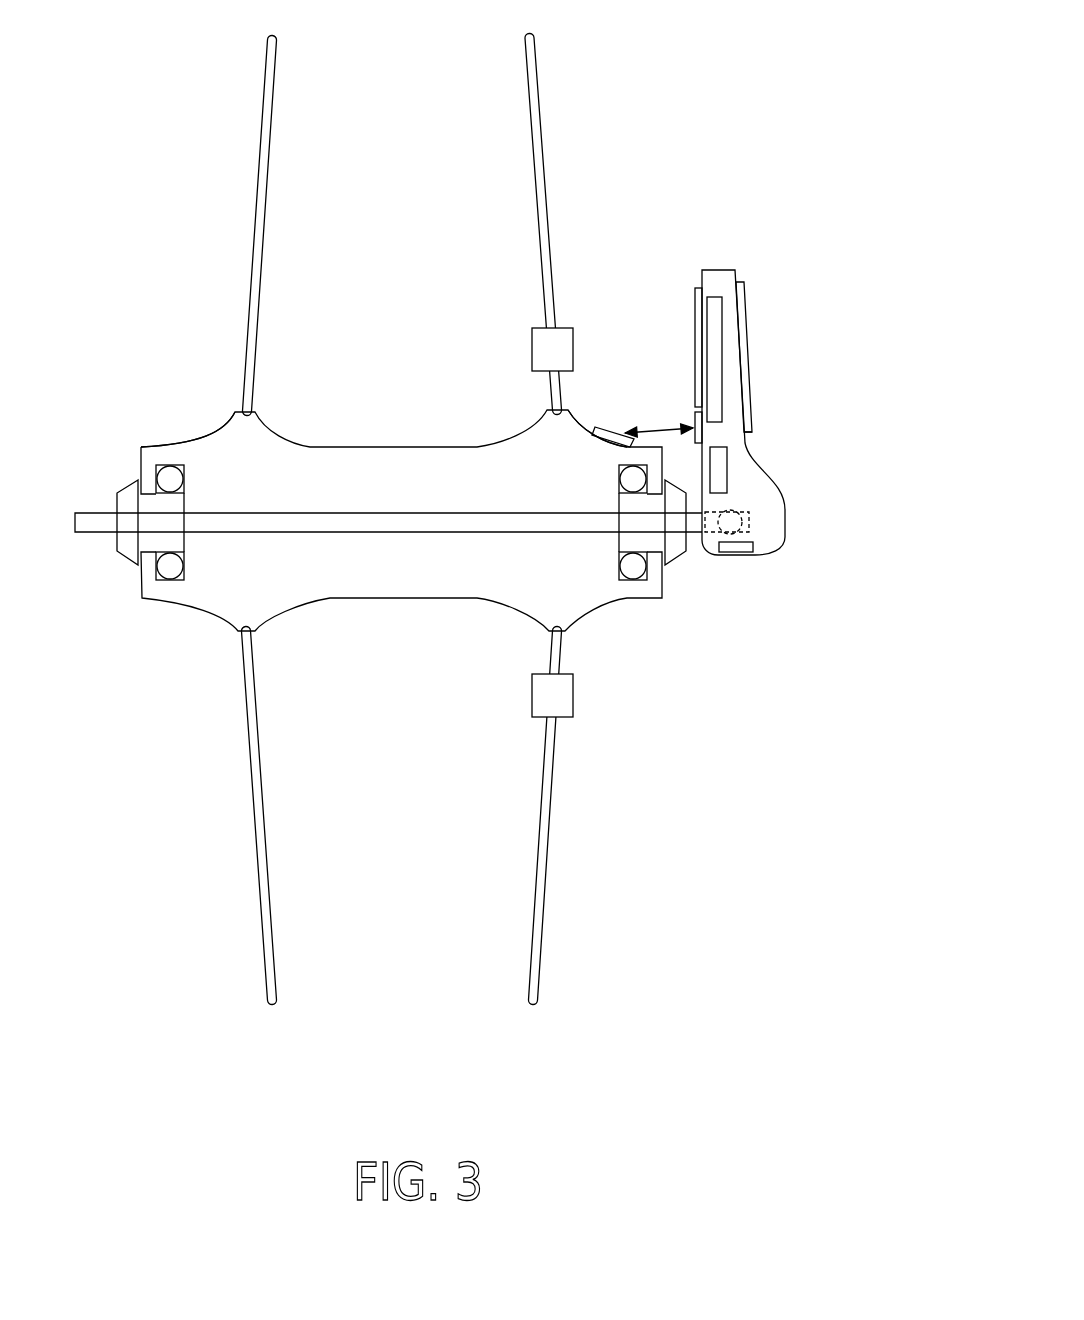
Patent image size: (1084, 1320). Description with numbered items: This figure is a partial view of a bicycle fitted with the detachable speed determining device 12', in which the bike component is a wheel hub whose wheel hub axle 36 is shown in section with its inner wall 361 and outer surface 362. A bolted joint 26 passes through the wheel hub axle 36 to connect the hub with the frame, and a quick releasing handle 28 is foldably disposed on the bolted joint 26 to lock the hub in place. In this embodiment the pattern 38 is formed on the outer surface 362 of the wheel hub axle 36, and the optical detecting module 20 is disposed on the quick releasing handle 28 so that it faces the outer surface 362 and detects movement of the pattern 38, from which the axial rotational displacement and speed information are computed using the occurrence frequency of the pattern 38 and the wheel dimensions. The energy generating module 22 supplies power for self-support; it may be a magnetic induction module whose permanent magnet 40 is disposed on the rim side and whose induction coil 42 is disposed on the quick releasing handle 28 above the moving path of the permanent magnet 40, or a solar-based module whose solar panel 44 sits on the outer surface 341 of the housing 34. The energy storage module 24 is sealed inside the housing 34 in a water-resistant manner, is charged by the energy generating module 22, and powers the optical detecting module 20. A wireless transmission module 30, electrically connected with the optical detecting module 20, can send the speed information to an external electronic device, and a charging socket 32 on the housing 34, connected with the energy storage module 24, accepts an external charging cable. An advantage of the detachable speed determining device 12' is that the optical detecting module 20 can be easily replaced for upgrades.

The detachable speed determining device 12' is at (785, 405).
The optical detecting module 20 is at (694, 414).
The energy generating module 22 is at (617, 417).
The energy storage module 24 is at (716, 297).
The bolted joint 26 is at (402, 525).
The quick releasing handle 28 is at (768, 506).
The wireless transmission module 30 is at (720, 470).
The charging socket 32 is at (735, 548).
The housing 34 is at (736, 282).
The wheel hub axle 36 is at (208, 590).
The pattern 38 is at (615, 427).
The permanent magnet 40 is at (572, 340).
The induction coil 42 is at (697, 303).
The solar panel 44 is at (803, 309).
The outer surface of the housing 341 is at (748, 444).
The inner wall of the wheel hub axle 361 is at (295, 442).
The outer surface of the wheel hub axle 362 is at (578, 423).